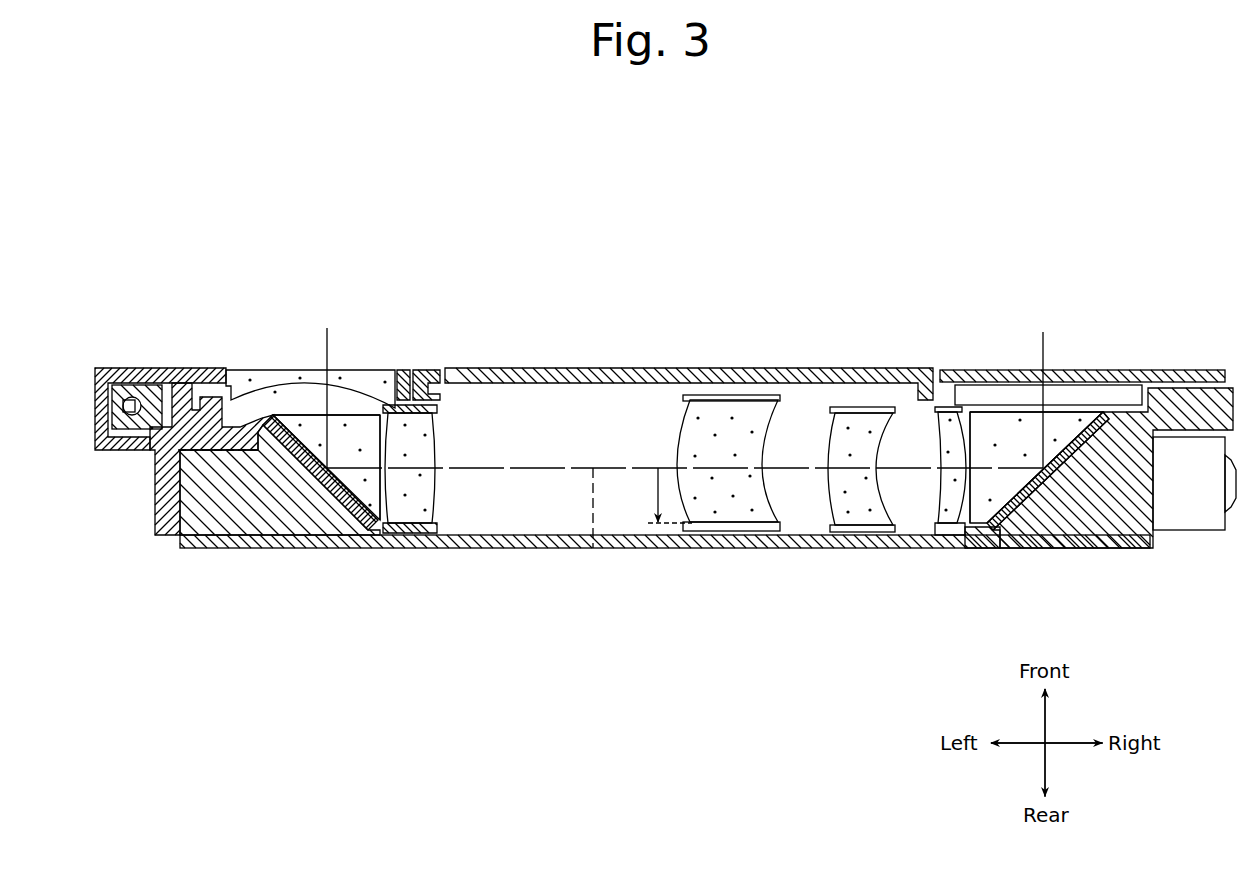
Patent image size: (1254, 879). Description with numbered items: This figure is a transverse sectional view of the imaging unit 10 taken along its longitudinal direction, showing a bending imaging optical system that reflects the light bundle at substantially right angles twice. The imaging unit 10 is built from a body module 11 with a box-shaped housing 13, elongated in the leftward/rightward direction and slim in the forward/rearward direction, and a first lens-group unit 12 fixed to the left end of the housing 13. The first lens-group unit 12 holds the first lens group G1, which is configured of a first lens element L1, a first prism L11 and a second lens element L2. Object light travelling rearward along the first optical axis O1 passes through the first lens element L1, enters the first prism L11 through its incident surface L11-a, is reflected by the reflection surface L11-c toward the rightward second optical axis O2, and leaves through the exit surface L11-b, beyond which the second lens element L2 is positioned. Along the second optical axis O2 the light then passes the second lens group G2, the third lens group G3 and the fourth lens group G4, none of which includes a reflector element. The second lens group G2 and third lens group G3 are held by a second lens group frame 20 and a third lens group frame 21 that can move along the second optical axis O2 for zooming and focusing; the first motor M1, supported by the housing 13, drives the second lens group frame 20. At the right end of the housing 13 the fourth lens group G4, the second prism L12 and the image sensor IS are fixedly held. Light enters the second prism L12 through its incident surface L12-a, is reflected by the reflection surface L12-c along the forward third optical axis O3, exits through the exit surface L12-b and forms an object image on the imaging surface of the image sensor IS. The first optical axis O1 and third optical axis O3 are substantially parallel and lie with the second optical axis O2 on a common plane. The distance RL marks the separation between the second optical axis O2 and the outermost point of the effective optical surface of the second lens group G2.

The imaging unit 10 is at (1133, 267).
The body module 11 is at (694, 351).
The first lens-group unit 12 is at (247, 356).
The housing 13 is at (798, 378).
The second lens group frame 20 is at (732, 398).
The third lens group frame 21 is at (876, 407).
The image sensor IS is at (1115, 392).
The first motor M1 is at (1187, 510).
The first optical axis O1 is at (327, 346).
The second optical axis O2 is at (593, 555).
The third optical axis O3 is at (1045, 357).
The distance RL is at (658, 495).
The first lens group G1 is at (374, 470).
The first lens element L1 is at (250, 410).
The first prism L11 is at (393, 447).
The incident surface L11-a is at (357, 414).
The exit surface L11-b is at (383, 438).
The reflection surface L11-c is at (355, 497).
The second lens element L2 is at (395, 501).
The second lens group G2 is at (728, 451).
The third lens group G3 is at (864, 454).
The fourth lens group G4 is at (945, 498).
The second prism L12 is at (1032, 473).
The incident surface L12-a is at (968, 528).
The exit surface L12-b is at (1012, 411).
The reflection surface L12-c is at (1030, 487).